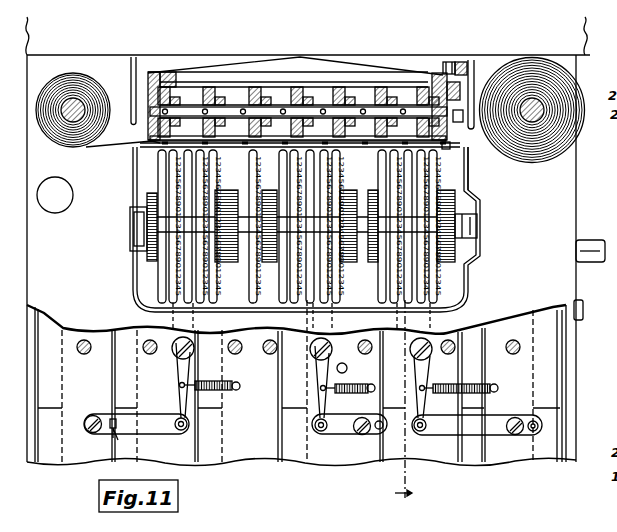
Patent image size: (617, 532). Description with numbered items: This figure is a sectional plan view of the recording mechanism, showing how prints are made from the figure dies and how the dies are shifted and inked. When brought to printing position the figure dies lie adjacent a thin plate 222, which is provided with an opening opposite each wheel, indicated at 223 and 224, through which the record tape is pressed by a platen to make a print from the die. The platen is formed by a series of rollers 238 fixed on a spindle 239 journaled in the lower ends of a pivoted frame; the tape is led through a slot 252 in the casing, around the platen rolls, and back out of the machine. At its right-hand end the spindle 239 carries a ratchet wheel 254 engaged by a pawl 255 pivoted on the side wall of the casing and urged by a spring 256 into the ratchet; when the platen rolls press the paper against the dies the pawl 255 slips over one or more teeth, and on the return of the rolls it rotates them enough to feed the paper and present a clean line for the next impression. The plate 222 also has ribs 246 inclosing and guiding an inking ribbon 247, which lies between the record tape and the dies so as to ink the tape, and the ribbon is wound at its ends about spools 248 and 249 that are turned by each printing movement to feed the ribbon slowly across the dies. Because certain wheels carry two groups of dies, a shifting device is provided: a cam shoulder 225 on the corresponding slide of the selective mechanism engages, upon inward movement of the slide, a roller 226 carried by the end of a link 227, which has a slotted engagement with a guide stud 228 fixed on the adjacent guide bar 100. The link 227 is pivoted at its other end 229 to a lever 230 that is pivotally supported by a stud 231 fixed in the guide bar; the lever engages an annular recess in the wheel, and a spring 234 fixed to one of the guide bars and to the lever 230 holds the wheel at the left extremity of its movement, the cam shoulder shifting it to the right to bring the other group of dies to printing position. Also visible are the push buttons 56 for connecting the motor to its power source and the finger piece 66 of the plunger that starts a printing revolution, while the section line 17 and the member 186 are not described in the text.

The ribbon spool 248 is at (72, 108).
The ribbon spool 249 is at (532, 110).
The ribs 246 is at (131, 124).
The inking ribbon 247 is at (112, 149).
The finger piece 66 is at (55, 200).
The rollers 238 is at (176, 96).
The spindle 239 is at (226, 112).
The ratchet wheel 254 is at (446, 120).
The spring 256 is at (450, 62).
The pawl 255 is at (464, 62).
The opening 223 is at (392, 148).
The plate 222 is at (449, 149).
The opening 224 is at (458, 154).
The slot 252 is at (413, 243).
The push buttons 56 is at (584, 304).
The stud 231 is at (425, 352).
The spring 234 is at (480, 385).
The lever 230 is at (423, 395).
The link 227 is at (447, 434).
The pivot end 229 is at (419, 432).
The guide stud 228 is at (516, 436).
The roller 226 is at (530, 423).
The cam shoulder 225 is at (563, 438).
The guide bar 100 is at (256, 458).
The section line 17 is at (402, 408).
The frame member 186 is at (604, 508).